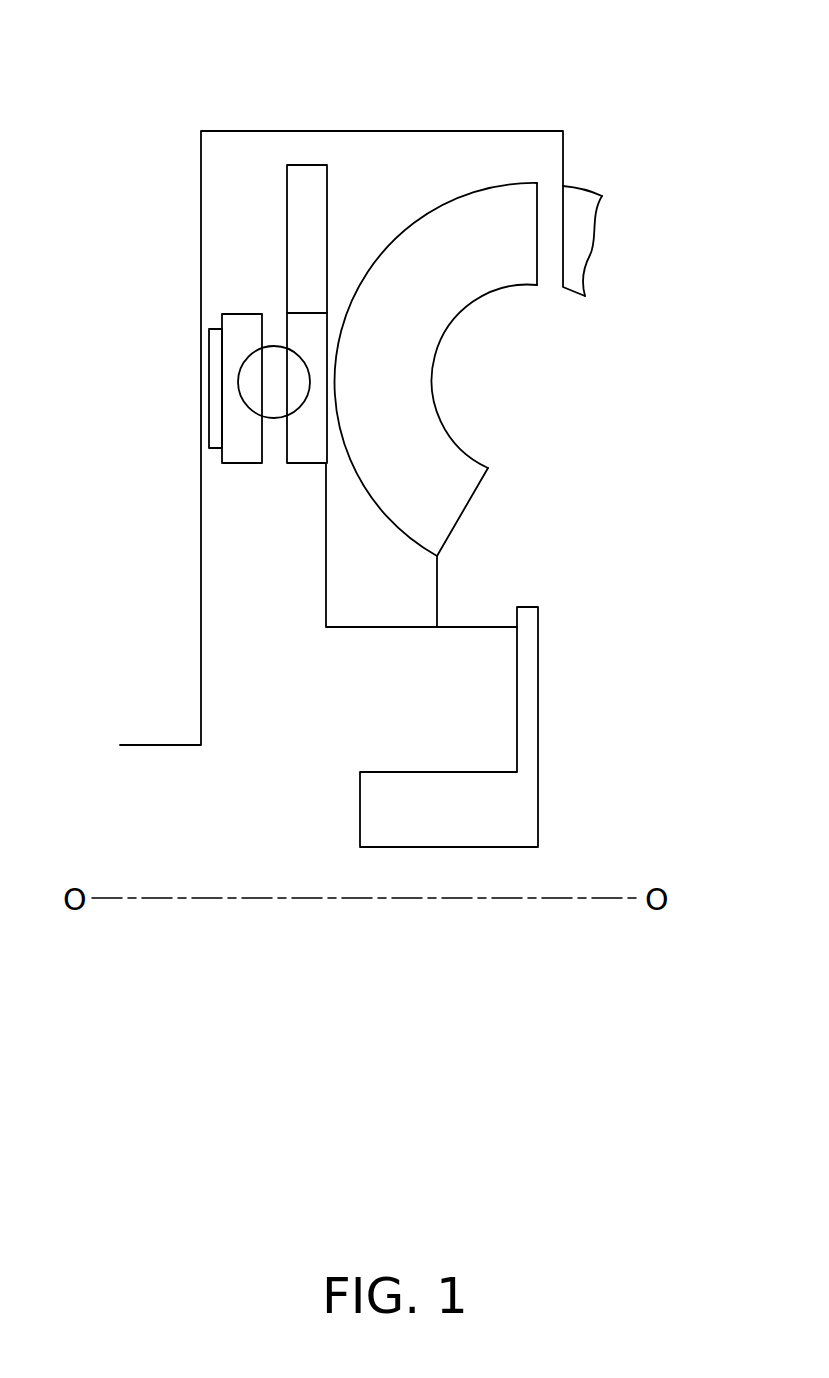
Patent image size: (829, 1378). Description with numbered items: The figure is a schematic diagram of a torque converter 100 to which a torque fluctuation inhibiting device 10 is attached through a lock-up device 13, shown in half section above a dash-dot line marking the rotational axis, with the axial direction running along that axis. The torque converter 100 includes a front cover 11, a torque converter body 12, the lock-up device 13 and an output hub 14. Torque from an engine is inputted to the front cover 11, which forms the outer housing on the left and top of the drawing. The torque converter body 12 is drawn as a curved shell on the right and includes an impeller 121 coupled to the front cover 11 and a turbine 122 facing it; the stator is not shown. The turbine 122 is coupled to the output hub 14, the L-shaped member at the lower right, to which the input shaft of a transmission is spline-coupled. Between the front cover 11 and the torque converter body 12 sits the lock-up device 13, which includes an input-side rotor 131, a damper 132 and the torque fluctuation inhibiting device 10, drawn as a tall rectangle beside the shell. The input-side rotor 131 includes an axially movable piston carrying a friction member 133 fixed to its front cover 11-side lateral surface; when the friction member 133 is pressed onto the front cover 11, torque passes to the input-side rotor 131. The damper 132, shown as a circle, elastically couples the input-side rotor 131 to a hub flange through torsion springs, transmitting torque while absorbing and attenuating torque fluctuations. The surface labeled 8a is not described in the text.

The torque converter 100 is at (608, 100).
The front cover 11 is at (201, 172).
The torque fluctuation inhibiting device 10 is at (305, 163).
The torque converter body 12 is at (630, 187).
The impeller 121 is at (583, 258).
The turbine 122 is at (432, 360).
The lens outer surface 8a is at (470, 192).
The lock-up device 13 is at (243, 514).
The input-side rotor 131 is at (242, 324).
The damper 132 is at (276, 427).
The friction member 133 is at (215, 393).
The output hub 14 is at (538, 696).